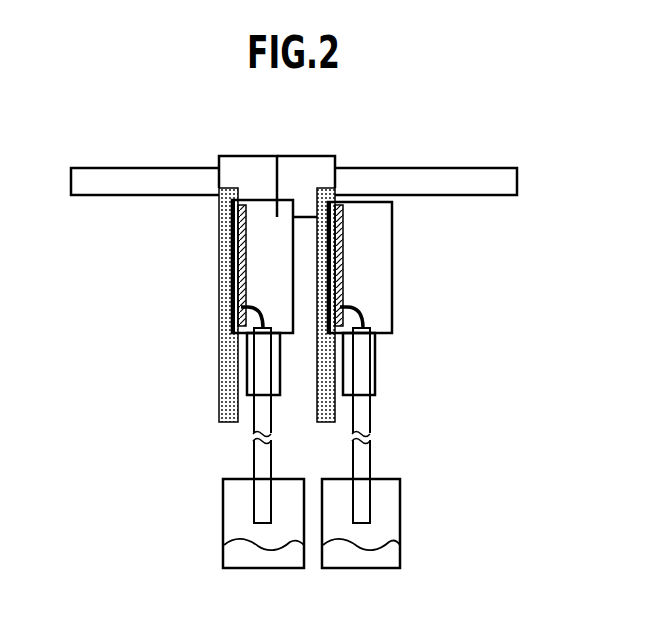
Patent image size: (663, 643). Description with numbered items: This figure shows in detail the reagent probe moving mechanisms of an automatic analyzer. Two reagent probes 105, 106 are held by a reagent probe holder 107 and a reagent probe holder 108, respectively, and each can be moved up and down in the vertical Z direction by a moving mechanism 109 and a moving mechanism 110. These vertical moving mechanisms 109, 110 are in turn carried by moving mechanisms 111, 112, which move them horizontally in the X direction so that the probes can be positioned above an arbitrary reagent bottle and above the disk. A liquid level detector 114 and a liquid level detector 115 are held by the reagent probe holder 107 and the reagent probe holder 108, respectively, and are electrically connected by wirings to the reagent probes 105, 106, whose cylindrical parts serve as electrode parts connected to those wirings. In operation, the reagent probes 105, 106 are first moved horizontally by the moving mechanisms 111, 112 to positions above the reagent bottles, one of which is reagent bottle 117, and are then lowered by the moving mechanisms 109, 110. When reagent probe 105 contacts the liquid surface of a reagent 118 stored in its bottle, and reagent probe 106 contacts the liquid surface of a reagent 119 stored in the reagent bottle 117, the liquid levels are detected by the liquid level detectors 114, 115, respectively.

The reagent probe 105 is at (256, 460).
The reagent probe 106 is at (369, 460).
The reagent probe holder 107 is at (250, 271).
The reagent probe holder 108 is at (387, 272).
The moving mechanism 109 is at (228, 233).
The moving mechanism 110 is at (340, 238).
The moving mechanism 111 is at (248, 162).
The moving mechanism 112 is at (307, 162).
The liquid level detector 114 is at (238, 295).
The liquid level detector 115 is at (343, 290).
The reagent bottle 117 is at (400, 518).
The reagent 118 is at (263, 563).
The reagent 119 is at (360, 563).